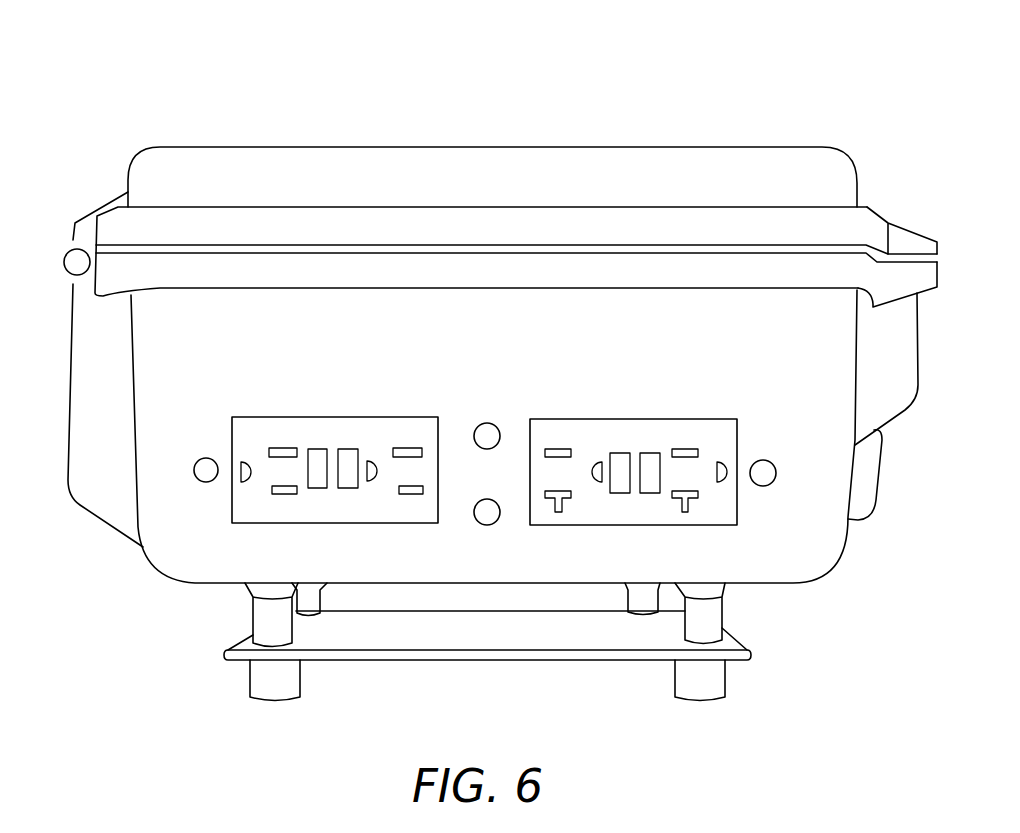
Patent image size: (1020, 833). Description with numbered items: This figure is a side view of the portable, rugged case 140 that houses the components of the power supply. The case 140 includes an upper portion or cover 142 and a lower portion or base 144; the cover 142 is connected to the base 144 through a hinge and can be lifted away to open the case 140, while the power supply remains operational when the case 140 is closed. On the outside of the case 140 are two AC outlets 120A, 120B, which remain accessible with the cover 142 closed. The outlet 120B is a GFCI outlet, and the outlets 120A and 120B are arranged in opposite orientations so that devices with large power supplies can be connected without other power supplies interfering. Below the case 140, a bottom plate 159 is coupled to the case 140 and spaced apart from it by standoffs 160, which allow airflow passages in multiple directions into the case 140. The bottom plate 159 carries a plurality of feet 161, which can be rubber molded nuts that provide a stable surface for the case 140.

The case 140 is at (246, 90).
The upper portion or cover 142 is at (488, 147).
The lower portion or base 144 is at (820, 568).
The AC outlet 120A is at (323, 417).
The GFCI outlet 120B is at (615, 419).
The standoffs 160 is at (285, 630).
The bottom plate 159 is at (523, 662).
The feet 161 is at (288, 675).